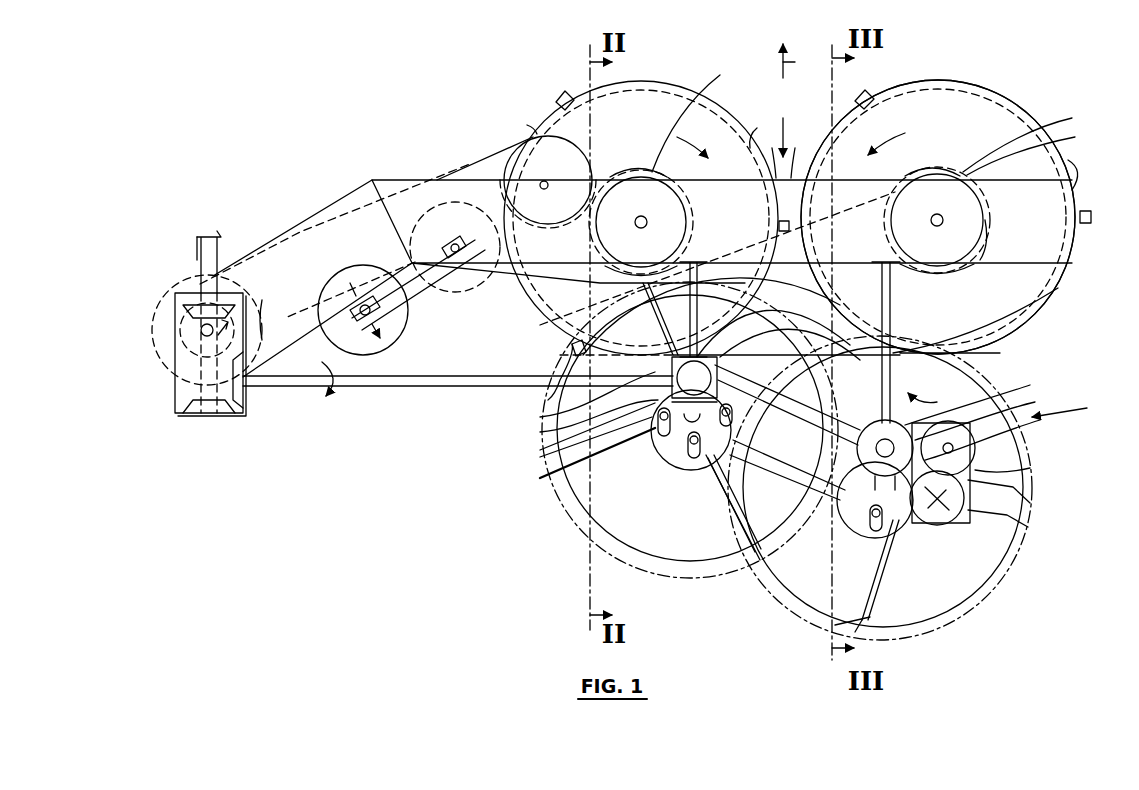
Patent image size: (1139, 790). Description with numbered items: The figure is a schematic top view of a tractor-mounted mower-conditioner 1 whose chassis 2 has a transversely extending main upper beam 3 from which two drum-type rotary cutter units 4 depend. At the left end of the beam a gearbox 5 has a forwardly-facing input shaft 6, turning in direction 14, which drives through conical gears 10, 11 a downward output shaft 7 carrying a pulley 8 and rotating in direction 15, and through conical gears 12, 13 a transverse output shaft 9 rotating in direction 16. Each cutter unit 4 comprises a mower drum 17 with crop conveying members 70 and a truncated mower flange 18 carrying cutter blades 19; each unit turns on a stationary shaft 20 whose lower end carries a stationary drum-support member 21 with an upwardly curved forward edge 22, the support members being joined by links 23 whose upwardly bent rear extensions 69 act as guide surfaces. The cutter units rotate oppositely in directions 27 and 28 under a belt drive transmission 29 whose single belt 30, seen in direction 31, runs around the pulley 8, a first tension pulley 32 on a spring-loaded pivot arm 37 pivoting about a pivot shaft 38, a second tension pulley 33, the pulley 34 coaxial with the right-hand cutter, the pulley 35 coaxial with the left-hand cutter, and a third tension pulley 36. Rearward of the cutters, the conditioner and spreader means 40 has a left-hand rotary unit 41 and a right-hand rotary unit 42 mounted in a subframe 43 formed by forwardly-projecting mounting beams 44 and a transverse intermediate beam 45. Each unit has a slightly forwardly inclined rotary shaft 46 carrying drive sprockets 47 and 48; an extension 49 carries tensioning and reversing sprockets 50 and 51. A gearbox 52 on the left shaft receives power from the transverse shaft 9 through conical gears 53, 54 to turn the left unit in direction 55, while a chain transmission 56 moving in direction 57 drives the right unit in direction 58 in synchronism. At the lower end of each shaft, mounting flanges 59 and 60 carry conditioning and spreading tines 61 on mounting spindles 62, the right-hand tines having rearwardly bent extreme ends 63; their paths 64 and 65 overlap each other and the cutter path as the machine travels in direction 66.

The mower-conditioner 1 is at (1044, 108).
The chassis 2 is at (798, 153).
The main upper beam 3 is at (768, 153).
The rotary cutter unit 4 is at (736, 111).
The gearbox 5 is at (183, 412).
The input shaft 6 is at (197, 258).
The output shaft 7 is at (205, 337).
The pulley 8 is at (156, 326).
The transverse output shaft 9 is at (275, 388).
The conical gear 10 is at (177, 296).
The conical gear 11 is at (188, 345).
The conical gear 12 is at (190, 412).
The conical gear 13 is at (243, 412).
The direction of movement of the input shaft 14 is at (220, 262).
The direction of rotation of output shaft 15 is at (255, 335).
The direction of rotation of transverse output shaft 16 is at (322, 398).
The mower drum 17 is at (876, 111).
The mower flange 18 is at (1077, 158).
The cutter blade 19 is at (1057, 323).
The stationary shaft 20 is at (634, 224).
The stationary drum-support member 21 is at (924, 134).
The upwardly curved forward edge 22 is at (670, 97).
The link 23 is at (910, 292).
The direction of rotation 27 is at (700, 140).
The direction of rotation 28 is at (887, 131).
The belt drive transmission 29 is at (444, 163).
The belt 30 is at (424, 176).
The direction of rotation of belt 31 is at (288, 318).
The first tension pulley 32 is at (405, 320).
The second tension pulley 33 is at (490, 275).
The pulley 34 is at (986, 236).
The pulley 35 is at (697, 233).
The third tension pulley 36 is at (506, 170).
The pivot arm 37 is at (395, 318).
The pivot shaft 38 is at (462, 256).
The conditioner and spreader means 40 is at (1074, 405).
The left-hand rotary conditioner and spreader unit 41 is at (677, 588).
The right-hand rotary conditioner and spreader unit 42 is at (1017, 578).
The subframe 43 is at (880, 400).
The mounting beam 44 is at (897, 327).
The transverse intermediate beam 45 is at (835, 540).
The rotary shaft 46 is at (662, 462).
The drive sprocket 47 is at (550, 445).
The drive sprocket 48 is at (900, 410).
The extension 49 is at (1027, 527).
The tensioning sprocket 50 is at (977, 440).
The reversing sprocket 51 is at (973, 465).
The gearbox 52 is at (722, 361).
The conical gear 53 is at (563, 417).
The conical gear 54 is at (553, 462).
The direction of rotation 55 is at (773, 360).
The chain transmission 56 is at (825, 505).
The direction of movement of chain 57 is at (814, 427).
The direction of rotation 58 is at (933, 388).
The mounting flange 59 is at (686, 473).
The mounting flange 60 is at (667, 473).
The conditioning and spreading tine 61 is at (880, 605).
The mounting spindle 62 is at (667, 443).
The extreme end of tine 63 is at (865, 622).
The path of tine ends 64 is at (703, 563).
The path of tine ends 65 is at (807, 612).
The direction of travel 66 is at (802, 100).
The rear extension 69 is at (920, 370).
The crop conveying member 70 is at (610, 174).